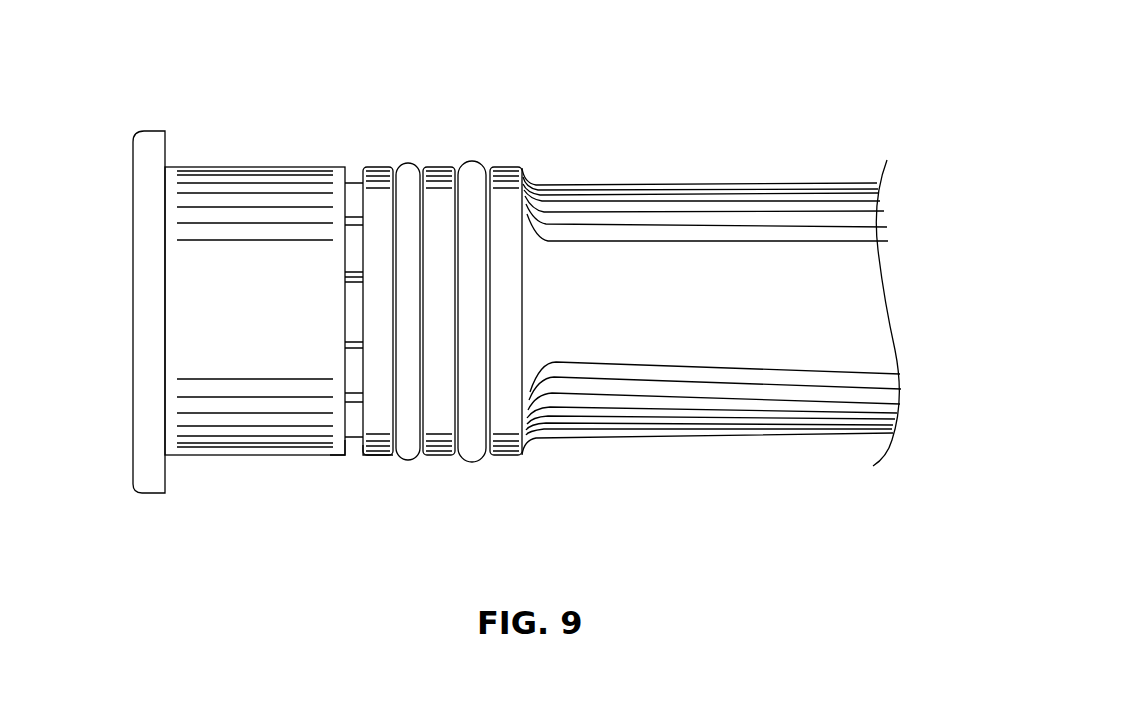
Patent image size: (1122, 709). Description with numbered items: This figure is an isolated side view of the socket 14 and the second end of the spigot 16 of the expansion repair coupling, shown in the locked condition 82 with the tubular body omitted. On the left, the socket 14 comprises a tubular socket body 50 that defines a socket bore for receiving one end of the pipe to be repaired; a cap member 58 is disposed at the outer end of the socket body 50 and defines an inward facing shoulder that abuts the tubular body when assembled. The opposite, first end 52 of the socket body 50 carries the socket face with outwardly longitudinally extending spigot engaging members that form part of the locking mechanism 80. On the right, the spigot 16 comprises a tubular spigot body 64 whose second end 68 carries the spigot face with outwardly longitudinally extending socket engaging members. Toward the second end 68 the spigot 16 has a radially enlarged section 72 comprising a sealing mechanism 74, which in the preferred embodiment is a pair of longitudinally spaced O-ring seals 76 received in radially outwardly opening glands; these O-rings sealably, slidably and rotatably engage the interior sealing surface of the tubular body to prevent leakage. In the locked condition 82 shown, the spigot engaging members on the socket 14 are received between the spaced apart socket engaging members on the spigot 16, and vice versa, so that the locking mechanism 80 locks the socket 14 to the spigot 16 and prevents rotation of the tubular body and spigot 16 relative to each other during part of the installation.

The socket 14 is at (255, 306).
The spigot 16 is at (711, 296).
The socket body 50 is at (240, 358).
The first end 52 is at (338, 465).
The cap member 58 is at (147, 156).
The spigot body 64 is at (738, 362).
The second end 68 is at (372, 467).
The radially enlarged section 72 is at (503, 317).
The sealing mechanism 74 is at (468, 470).
The O-ring seal 76 is at (410, 172).
The locking mechanism 80 is at (358, 164).
The locked condition 82 is at (355, 460).